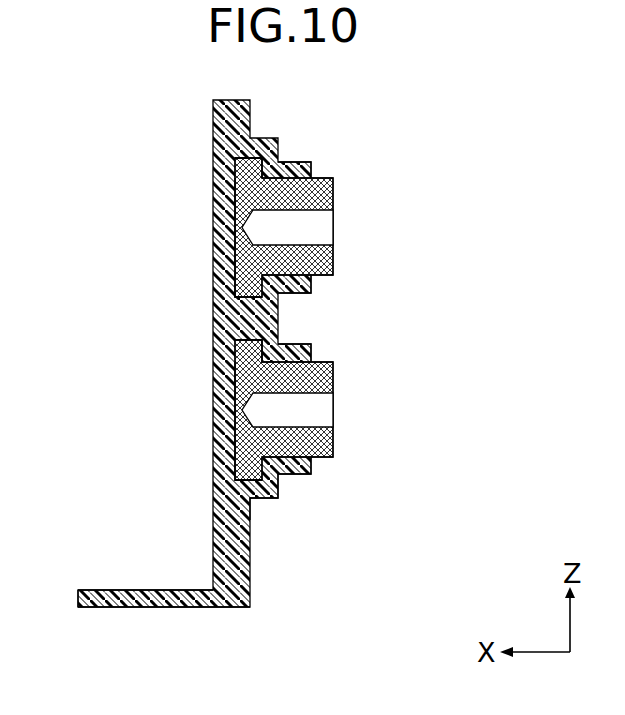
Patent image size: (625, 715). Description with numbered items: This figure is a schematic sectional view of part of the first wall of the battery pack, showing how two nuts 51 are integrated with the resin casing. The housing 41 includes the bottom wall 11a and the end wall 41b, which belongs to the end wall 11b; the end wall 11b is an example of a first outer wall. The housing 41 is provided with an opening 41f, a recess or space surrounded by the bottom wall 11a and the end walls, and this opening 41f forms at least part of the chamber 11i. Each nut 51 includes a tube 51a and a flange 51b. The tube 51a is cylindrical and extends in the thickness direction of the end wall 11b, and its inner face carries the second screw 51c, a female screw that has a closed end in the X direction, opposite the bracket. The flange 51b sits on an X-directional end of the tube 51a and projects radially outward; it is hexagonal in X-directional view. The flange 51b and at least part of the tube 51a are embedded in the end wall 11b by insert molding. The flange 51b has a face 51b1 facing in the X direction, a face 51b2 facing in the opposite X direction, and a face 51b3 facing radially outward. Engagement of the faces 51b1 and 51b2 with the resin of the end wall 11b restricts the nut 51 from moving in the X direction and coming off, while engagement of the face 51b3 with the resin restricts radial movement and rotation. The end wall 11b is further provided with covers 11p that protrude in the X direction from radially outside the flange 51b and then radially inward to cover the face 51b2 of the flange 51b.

The bottom wall 11a is at (110, 607).
The housing 41 is at (155, 635).
The end wall 41b is at (250, 548).
The end wall 11b is at (252, 353).
The opening 41f is at (215, 497).
The chamber 11i is at (221, 577).
The cover 11p is at (310, 160).
The nut 51 is at (292, 311).
The tube 51a is at (292, 311).
The flange 51b is at (272, 311).
The face 51b1 is at (238, 167).
The face 51b2 is at (256, 180).
The face 51b3 is at (244, 156).
The second screw 51c is at (316, 245).